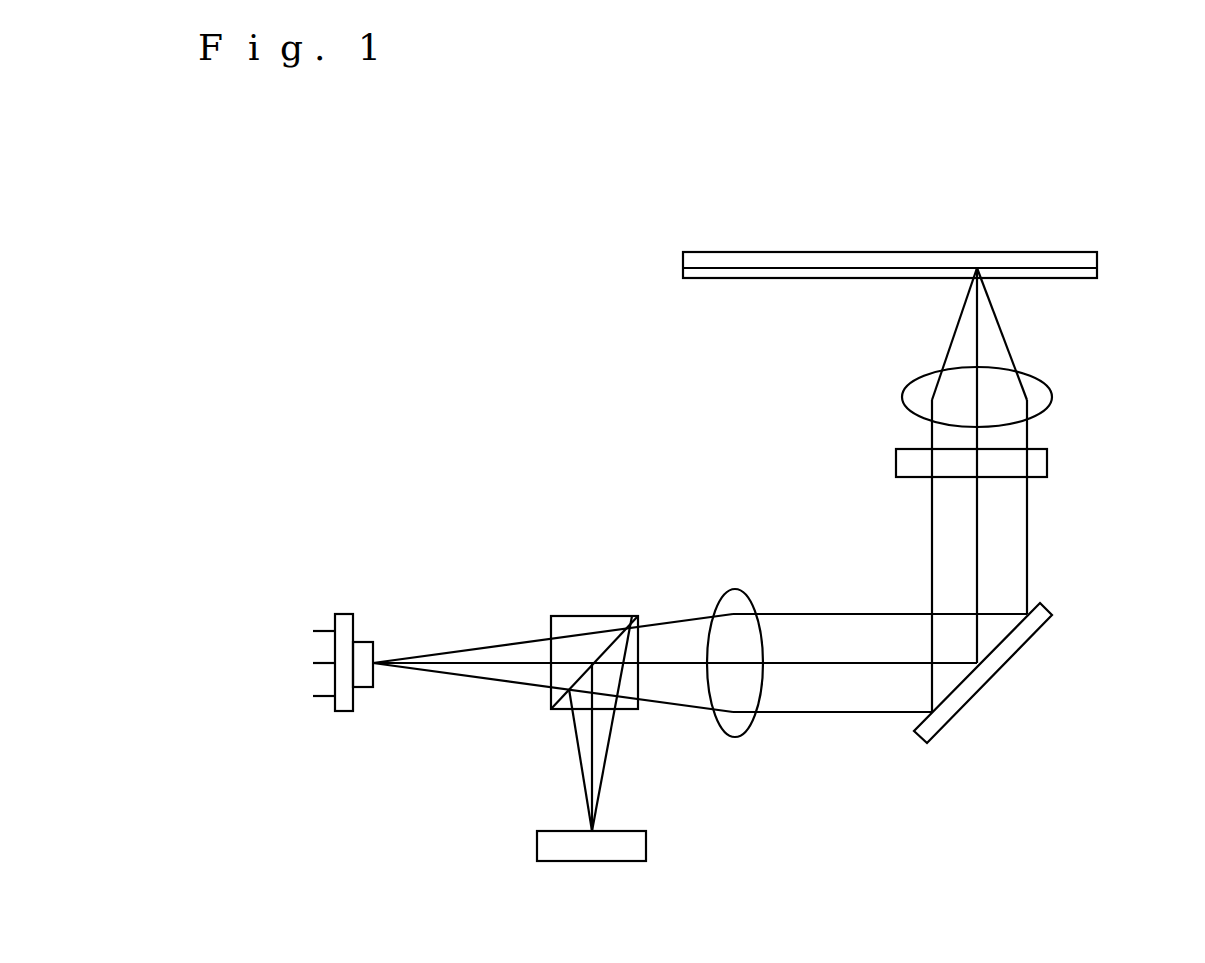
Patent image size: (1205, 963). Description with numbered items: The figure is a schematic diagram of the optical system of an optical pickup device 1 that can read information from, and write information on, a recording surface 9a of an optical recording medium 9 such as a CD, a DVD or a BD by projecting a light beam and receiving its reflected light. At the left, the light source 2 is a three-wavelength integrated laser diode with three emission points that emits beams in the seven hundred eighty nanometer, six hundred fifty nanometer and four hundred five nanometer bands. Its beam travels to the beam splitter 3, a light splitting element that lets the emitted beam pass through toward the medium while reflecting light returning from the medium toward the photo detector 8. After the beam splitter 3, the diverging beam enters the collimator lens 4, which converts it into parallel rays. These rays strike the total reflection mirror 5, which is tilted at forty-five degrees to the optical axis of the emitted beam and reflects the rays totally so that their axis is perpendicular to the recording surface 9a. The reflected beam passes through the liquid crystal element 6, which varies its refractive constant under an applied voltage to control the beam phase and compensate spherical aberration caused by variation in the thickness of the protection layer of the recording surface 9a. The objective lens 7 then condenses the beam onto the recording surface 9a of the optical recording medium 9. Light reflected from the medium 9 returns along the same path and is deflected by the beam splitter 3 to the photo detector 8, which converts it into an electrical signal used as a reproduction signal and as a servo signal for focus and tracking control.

The optical pickup device 1 is at (490, 330).
The light source 2 is at (343, 632).
The beam splitter 3 is at (577, 615).
The collimator lens 4 is at (741, 723).
The total reflection mirror 5 is at (993, 667).
The liquid crystal element 6 is at (1038, 467).
The objective lens 7 is at (1040, 392).
The photo detector 8 is at (630, 856).
The optical recording medium 9 is at (1047, 252).
The recording surface 9a is at (1083, 270).